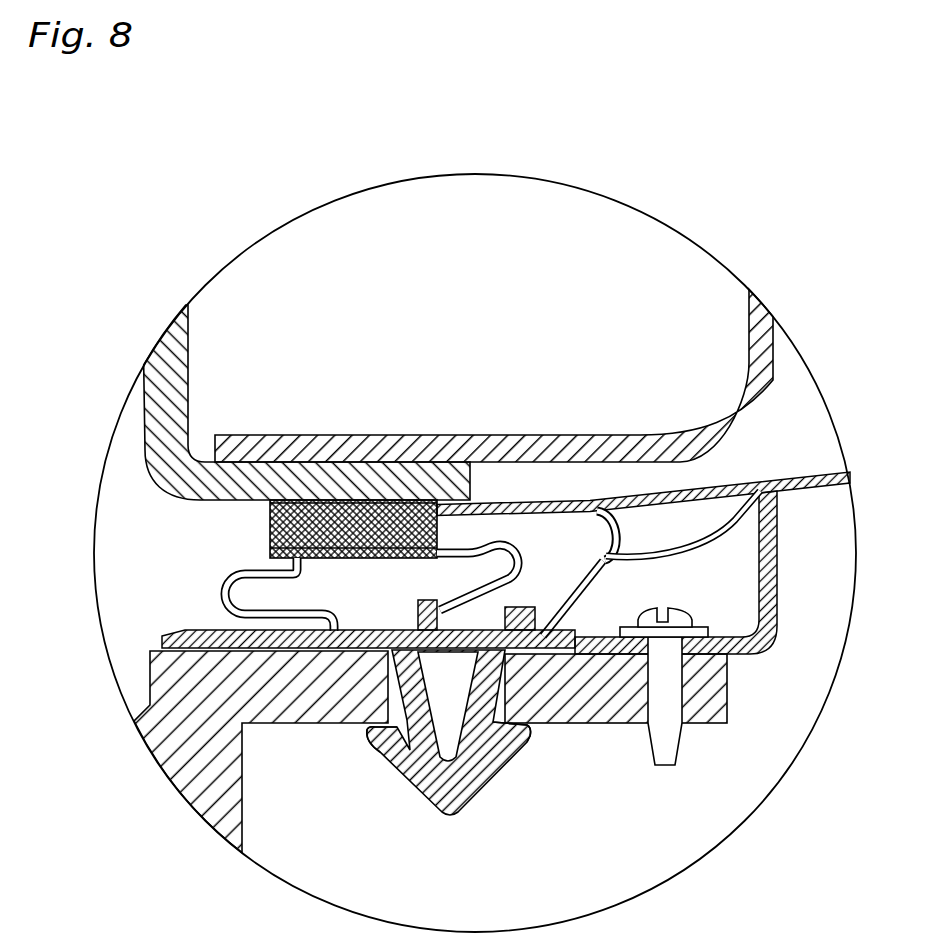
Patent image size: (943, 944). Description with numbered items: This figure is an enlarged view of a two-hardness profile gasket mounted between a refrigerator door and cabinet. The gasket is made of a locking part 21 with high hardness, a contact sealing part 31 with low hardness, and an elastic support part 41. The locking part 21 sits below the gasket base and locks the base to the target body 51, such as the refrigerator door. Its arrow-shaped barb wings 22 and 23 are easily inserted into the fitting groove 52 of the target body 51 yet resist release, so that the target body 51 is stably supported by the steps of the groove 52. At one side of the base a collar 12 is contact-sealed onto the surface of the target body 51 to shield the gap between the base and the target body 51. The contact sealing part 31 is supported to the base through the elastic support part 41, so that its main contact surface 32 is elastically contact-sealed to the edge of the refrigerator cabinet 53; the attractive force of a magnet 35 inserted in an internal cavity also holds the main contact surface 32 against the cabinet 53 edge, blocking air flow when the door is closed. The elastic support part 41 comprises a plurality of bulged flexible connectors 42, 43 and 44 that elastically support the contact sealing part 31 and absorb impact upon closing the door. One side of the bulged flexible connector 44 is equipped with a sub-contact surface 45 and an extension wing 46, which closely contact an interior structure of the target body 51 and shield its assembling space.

The collar 12 is at (190, 641).
The locking part 21 is at (388, 788).
The barb wing 22 is at (380, 752).
The barb wing 23 is at (525, 745).
The contact sealing part 31 is at (252, 520).
The main contact surface 32 is at (380, 460).
The magnet 35 is at (290, 498).
The elastic support part 41 is at (195, 572).
The bulged flexible connector 42 is at (224, 606).
The bulged flexible connector 43 is at (500, 558).
The bulged flexible connector 44 is at (610, 560).
The sub-contact surface 45 is at (528, 505).
The extension wing 46 is at (732, 493).
The target body 51 is at (727, 683).
The fitting groove 52 is at (503, 692).
The refrigerator cabinet 53 is at (172, 485).